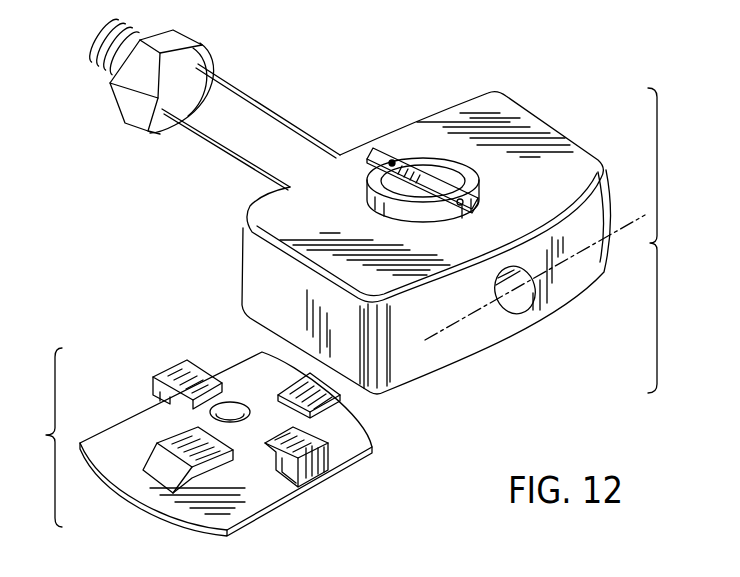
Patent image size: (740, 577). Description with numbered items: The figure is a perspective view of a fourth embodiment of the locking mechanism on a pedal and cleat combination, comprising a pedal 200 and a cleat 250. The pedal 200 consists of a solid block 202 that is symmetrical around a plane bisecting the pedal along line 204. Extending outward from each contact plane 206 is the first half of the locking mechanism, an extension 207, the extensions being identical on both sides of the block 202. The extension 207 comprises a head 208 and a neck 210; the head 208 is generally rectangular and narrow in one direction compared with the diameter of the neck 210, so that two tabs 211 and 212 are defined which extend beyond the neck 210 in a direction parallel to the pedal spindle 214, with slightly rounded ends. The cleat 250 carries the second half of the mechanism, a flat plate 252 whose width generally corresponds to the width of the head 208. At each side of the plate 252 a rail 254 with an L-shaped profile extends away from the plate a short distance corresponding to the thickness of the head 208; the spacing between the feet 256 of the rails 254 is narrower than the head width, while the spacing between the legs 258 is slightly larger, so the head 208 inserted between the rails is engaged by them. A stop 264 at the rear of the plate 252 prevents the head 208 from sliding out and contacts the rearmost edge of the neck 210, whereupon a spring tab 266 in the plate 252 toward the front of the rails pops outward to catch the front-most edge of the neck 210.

The pedal 200 is at (717, 257).
The solid block 202 is at (470, 343).
The line 204 is at (625, 213).
The contact plane 206 is at (503, 122).
The extension 207 is at (433, 157).
The head 208 is at (420, 196).
The neck 210 is at (372, 209).
The tab 211 is at (387, 155).
The tab 212 is at (480, 206).
The pedal spindle 214 is at (227, 135).
The cleat 250 is at (42, 447).
The flat plate 252 is at (122, 477).
The rail 254 is at (196, 371).
The foot 256 is at (182, 372).
The leg 258 is at (153, 393).
The stop 264 is at (340, 395).
The spring tab 266 is at (197, 457).